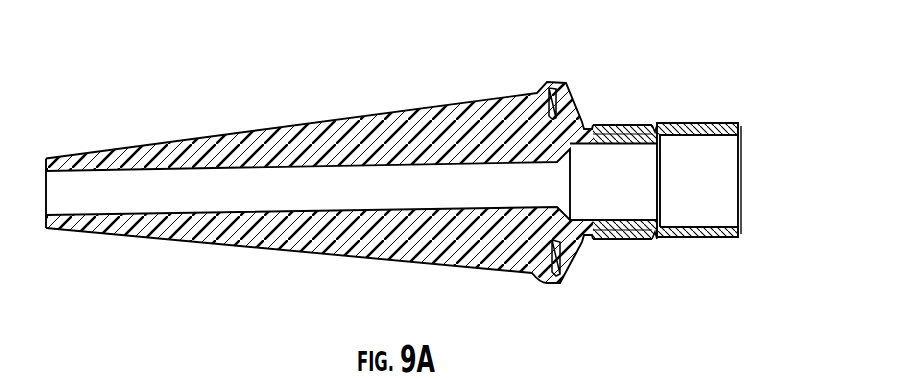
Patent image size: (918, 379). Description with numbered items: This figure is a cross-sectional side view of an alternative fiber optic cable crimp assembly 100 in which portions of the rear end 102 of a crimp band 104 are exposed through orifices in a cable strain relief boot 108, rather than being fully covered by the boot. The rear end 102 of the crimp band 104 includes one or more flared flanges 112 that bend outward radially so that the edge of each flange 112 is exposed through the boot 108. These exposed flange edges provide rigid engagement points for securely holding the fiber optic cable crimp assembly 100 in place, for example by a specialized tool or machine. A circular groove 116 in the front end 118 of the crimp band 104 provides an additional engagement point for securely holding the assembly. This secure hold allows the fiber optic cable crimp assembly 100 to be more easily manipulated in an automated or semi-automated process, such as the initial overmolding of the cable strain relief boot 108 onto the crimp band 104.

The fiber optic cable crimp assembly 100 is at (586, 45).
The rear end of the crimp band 102 is at (589, 125).
The crimp band 104 is at (687, 123).
The cable strain relief boot 108 is at (292, 126).
The flared flange 112 is at (535, 96).
The circular groove 116 is at (653, 238).
The front end of the crimp band 118 is at (708, 238).